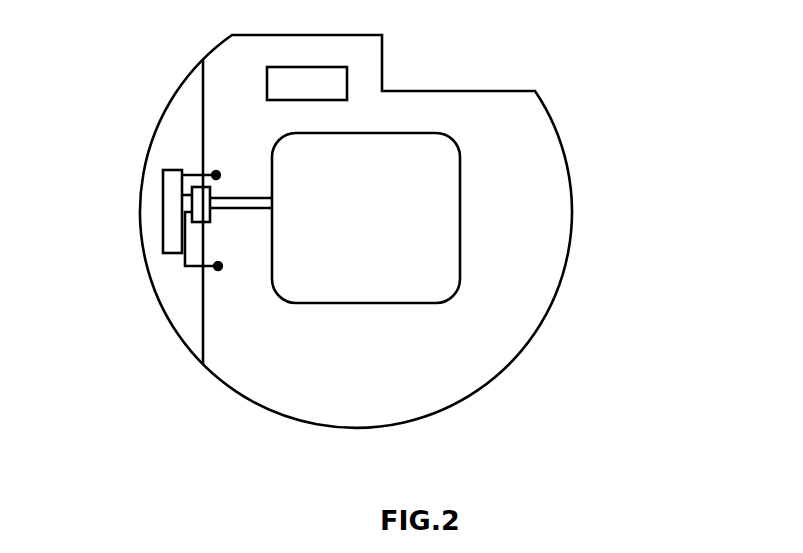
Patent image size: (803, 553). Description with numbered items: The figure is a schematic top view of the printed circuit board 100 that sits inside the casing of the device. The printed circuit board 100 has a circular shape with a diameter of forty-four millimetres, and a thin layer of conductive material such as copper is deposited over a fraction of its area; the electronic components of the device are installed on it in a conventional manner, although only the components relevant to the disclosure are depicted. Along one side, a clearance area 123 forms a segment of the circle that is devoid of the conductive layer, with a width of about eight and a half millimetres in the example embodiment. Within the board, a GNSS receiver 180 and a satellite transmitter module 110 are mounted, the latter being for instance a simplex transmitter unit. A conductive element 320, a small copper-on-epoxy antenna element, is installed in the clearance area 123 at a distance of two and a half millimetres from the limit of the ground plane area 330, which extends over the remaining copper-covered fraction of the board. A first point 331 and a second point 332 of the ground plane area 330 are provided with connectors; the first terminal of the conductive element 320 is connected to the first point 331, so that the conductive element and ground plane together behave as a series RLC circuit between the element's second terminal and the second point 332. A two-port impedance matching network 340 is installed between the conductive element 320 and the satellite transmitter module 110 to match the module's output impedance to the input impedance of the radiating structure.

The printed circuit board 100 is at (507, 267).
The satellite transmitter module 110 is at (447, 182).
The clearance area 123 is at (177, 287).
The GNSS receiver 180 is at (322, 83).
The conductive element 320 is at (170, 187).
The ground plane area 330 is at (393, 380).
The first point of the ground plane area 331 is at (216, 175).
The second point of the ground plane area 332 is at (219, 267).
The impedance matching network 340 is at (200, 203).